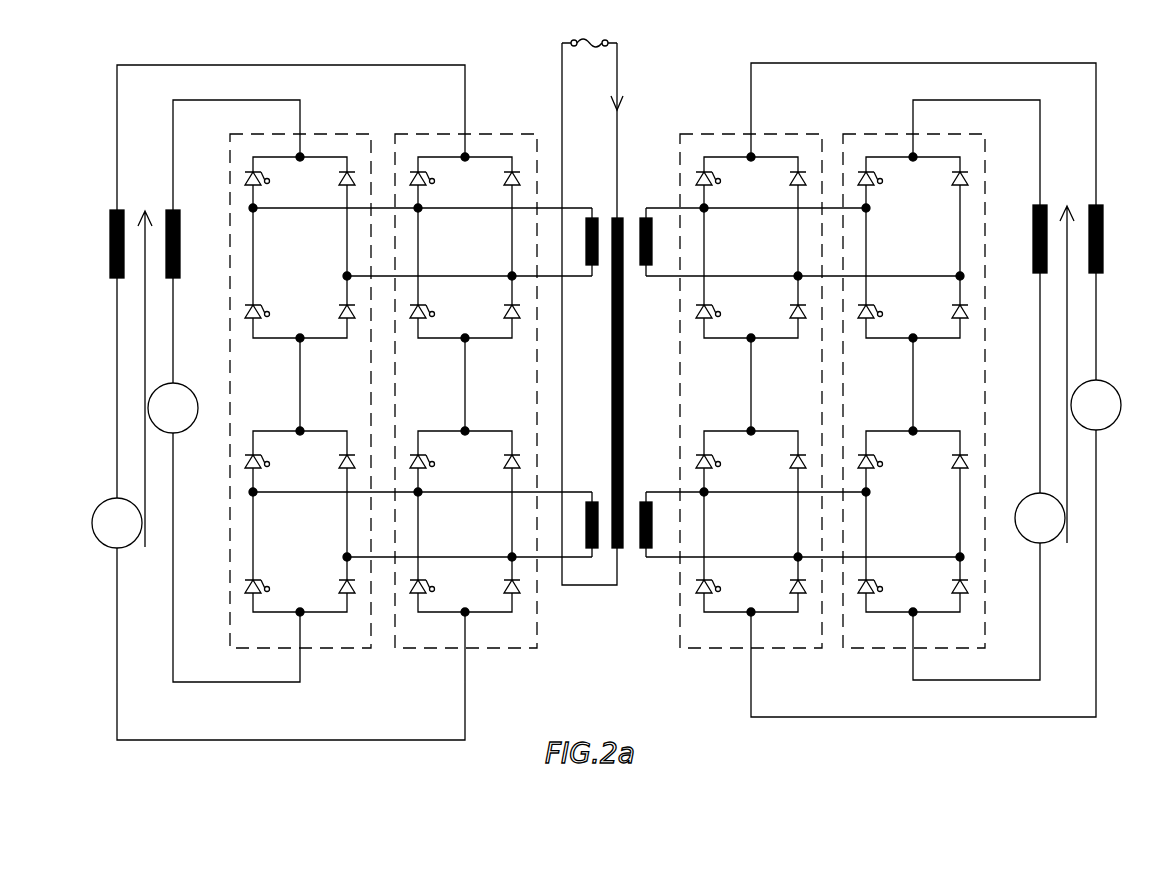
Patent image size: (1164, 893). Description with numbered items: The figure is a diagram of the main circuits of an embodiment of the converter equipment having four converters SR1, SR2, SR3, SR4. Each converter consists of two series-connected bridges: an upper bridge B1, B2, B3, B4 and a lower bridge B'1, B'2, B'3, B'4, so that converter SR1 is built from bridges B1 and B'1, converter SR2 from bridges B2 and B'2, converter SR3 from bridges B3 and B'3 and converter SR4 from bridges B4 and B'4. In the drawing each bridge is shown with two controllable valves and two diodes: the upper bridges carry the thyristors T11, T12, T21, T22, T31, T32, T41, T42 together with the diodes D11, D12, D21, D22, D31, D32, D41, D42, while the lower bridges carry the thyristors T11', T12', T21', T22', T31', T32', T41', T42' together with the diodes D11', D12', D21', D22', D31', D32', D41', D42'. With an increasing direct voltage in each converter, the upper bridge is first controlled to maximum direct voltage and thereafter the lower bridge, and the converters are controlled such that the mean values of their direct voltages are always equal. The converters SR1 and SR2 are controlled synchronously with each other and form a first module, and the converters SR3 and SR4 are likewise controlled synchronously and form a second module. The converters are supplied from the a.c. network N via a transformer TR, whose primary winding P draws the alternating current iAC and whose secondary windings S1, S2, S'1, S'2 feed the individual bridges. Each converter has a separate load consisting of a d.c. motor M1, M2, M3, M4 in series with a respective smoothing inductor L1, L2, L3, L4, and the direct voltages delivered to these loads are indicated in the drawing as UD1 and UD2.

The upper bridge B1 is at (308, 257).
The upper bridge B2 is at (473, 257).
The upper bridge B3 is at (759, 257).
The upper bridge B4 is at (921, 257).
The lower bridge B'1 is at (300, 521).
The lower bridge B'2 is at (465, 521).
The lower bridge B'3 is at (751, 521).
The lower bridge B'4 is at (913, 521).
The thyristor T11 is at (283, 176).
The thyristor T12 is at (283, 299).
The thyristor T21 is at (448, 176).
The thyristor T22 is at (448, 299).
The thyristor T31 is at (735, 176).
The thyristor T32 is at (735, 299).
The thyristor T41 is at (896, 178).
The thyristor T42 is at (897, 299).
The thyristor T11' is at (285, 452).
The thyristor T12' is at (284, 575).
The thyristor T21' is at (450, 452).
The thyristor T22' is at (449, 575).
The thyristor T31' is at (736, 452).
The thyristor T32' is at (735, 575).
The thyristor T41' is at (898, 452).
The thyristor T42' is at (898, 575).
The diode D11 is at (318, 189).
The diode D12 is at (317, 317).
The diode D21 is at (483, 189).
The diode D22 is at (482, 317).
The diode D31 is at (768, 189).
The diode D32 is at (768, 317).
The diode D41 is at (941, 194).
The diode D42 is at (928, 317).
The diode D11' is at (318, 473).
The diode D12' is at (316, 592).
The diode D21' is at (483, 473).
The diode D22' is at (481, 592).
The diode D31' is at (769, 473).
The diode D32' is at (767, 592).
The diode D41' is at (931, 473).
The diode D42' is at (930, 592).
The converter SR1 is at (279, 649).
The converter SR2 is at (444, 649).
The converter SR3 is at (729, 649).
The converter SR4 is at (892, 649).
The smoothing inductor L1 is at (180, 242).
The smoothing inductor L2 is at (110, 242).
The smoothing inductor L3 is at (1103, 240).
The smoothing inductor L4 is at (1033, 241).
The d.c. motor M1 is at (173, 408).
The d.c. motor M2 is at (117, 523).
The d.c. motor M3 is at (1096, 405).
The d.c. motor M4 is at (1040, 518).
The DC output voltage UD1 is at (149, 364).
The DC output voltage UD2 is at (1071, 360).
The a.c. network N is at (563, 42).
The AC current iAC is at (631, 103).
The transformer primary winding P is at (624, 212).
The secondary winding S1 is at (596, 210).
The secondary winding S2 is at (644, 278).
The secondary winding S'1 is at (591, 497).
The secondary winding S'2 is at (643, 497).
The transformer TR is at (626, 565).